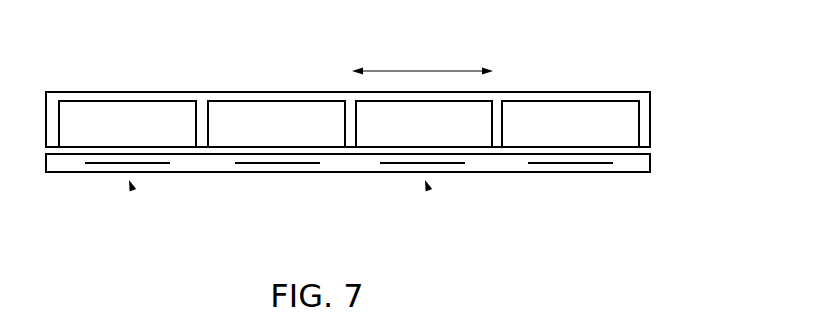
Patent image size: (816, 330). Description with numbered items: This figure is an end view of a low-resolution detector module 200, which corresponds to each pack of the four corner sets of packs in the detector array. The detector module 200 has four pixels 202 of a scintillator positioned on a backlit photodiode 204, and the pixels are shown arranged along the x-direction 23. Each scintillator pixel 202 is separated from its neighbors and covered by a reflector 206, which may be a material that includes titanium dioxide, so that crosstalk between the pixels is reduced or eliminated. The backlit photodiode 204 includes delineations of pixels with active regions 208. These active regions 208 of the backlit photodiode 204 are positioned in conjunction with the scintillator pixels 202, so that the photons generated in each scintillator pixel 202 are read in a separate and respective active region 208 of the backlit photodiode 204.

The detector module 200 is at (678, 81).
The scintillator pixel 202 is at (123, 117).
The backlit photodiode 204 is at (523, 172).
The reflector 206 is at (220, 98).
The active region 208 is at (133, 190).
The x-direction 23 is at (423, 70).